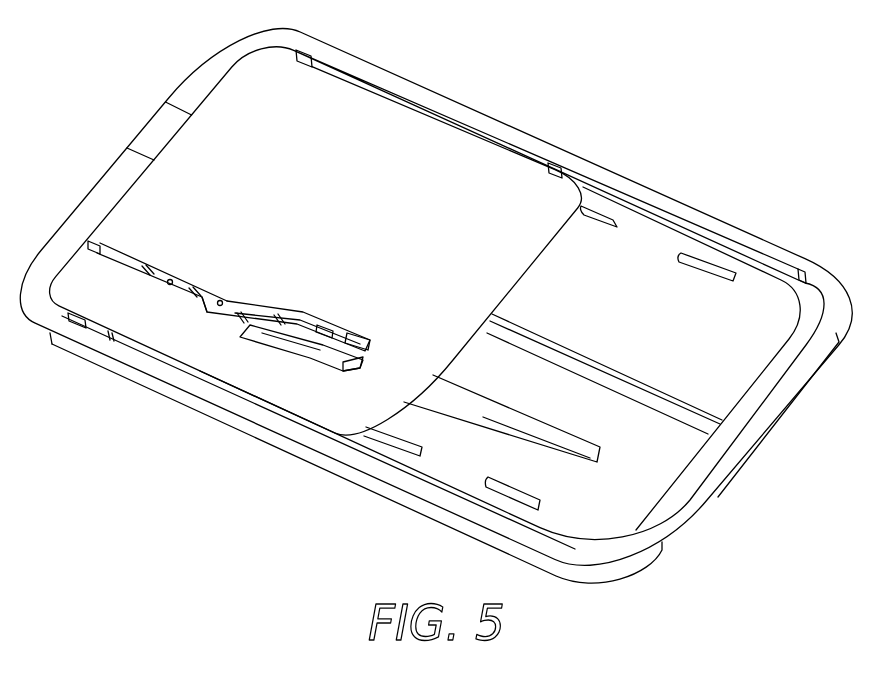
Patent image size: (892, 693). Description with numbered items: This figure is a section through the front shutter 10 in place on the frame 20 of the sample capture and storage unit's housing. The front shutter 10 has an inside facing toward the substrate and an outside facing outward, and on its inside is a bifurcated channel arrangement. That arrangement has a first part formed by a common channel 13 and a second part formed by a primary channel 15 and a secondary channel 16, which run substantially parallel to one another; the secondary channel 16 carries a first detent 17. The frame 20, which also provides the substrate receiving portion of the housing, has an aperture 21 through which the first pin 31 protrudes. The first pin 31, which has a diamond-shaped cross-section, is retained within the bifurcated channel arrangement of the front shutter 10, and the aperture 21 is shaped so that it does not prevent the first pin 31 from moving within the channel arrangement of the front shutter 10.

The front shutter 10 is at (450, 137).
The common channel 13 is at (117, 268).
The primary channel 15 is at (302, 348).
The secondary channel 16 is at (327, 330).
The first detent 17 is at (362, 338).
The frame 20 is at (735, 381).
The aperture 21 is at (482, 418).
The first pin 31 is at (352, 370).